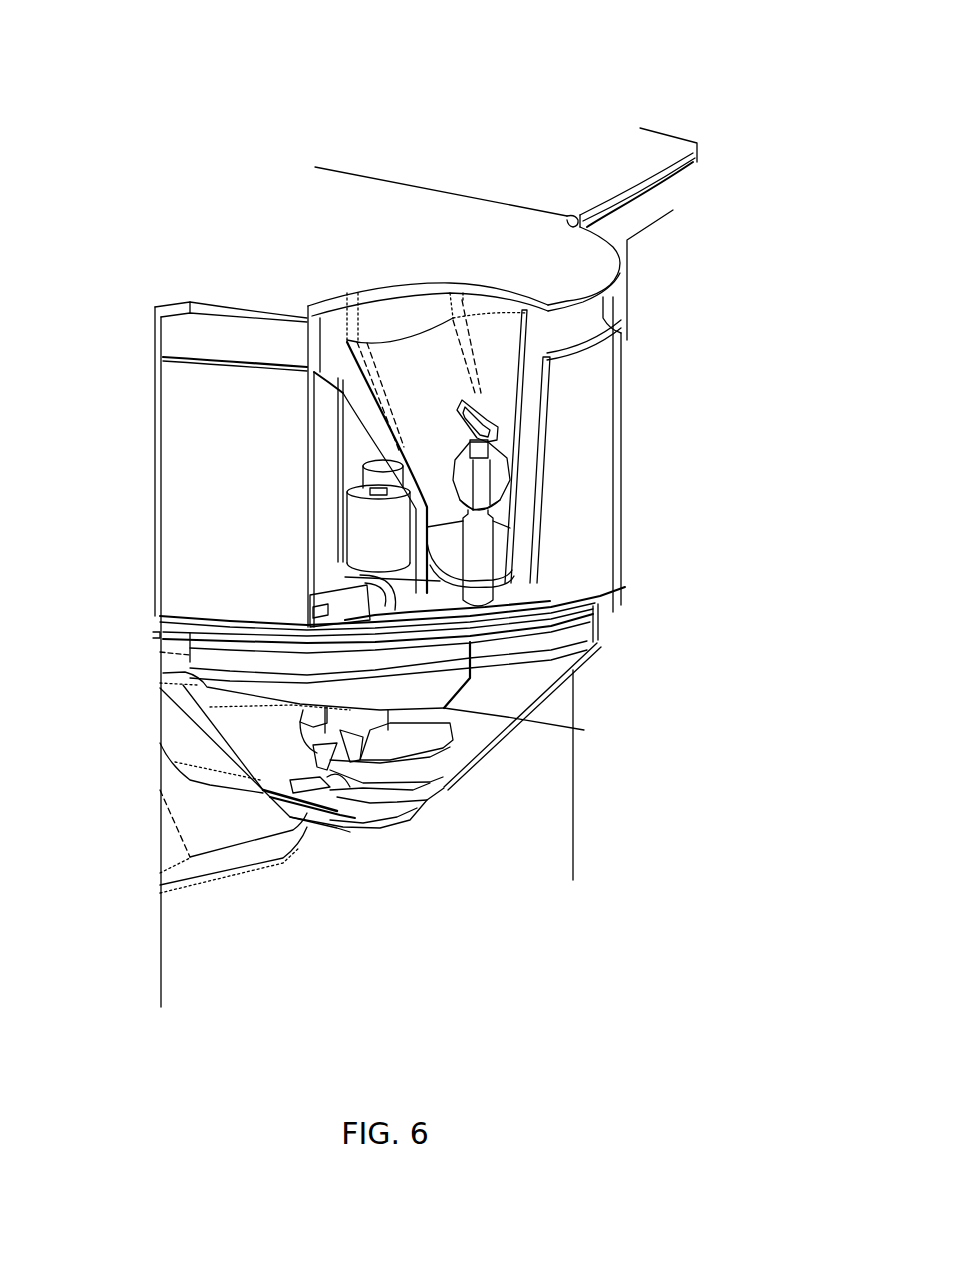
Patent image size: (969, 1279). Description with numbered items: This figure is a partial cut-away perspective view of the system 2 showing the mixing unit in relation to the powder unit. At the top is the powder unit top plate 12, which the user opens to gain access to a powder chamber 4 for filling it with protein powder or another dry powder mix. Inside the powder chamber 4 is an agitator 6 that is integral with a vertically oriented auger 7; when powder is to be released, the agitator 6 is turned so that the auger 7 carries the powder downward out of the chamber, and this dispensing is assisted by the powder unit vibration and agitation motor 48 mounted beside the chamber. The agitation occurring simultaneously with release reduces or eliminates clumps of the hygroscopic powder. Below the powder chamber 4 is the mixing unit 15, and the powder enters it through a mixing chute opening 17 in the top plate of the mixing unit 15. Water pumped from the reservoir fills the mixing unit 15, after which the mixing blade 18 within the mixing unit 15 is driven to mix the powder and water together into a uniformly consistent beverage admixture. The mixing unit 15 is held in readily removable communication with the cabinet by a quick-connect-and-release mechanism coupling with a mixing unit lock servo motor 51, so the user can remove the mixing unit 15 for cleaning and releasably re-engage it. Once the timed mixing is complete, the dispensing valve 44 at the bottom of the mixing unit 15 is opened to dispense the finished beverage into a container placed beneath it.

The system 2 is at (69, 109).
The powder unit top plate 12 is at (413, 233).
The powder chamber 4 is at (435, 390).
The agitator 6 is at (490, 405).
The auger 7 is at (478, 555).
The powder unit vibration and agitation motor 48 is at (378, 481).
The mixing unit lock servo motor 51 is at (338, 580).
The mixing chute opening 17 is at (507, 593).
The mixing unit 15 is at (600, 645).
The mixing blade 18 is at (451, 760).
The dispensing valve 44 is at (357, 783).